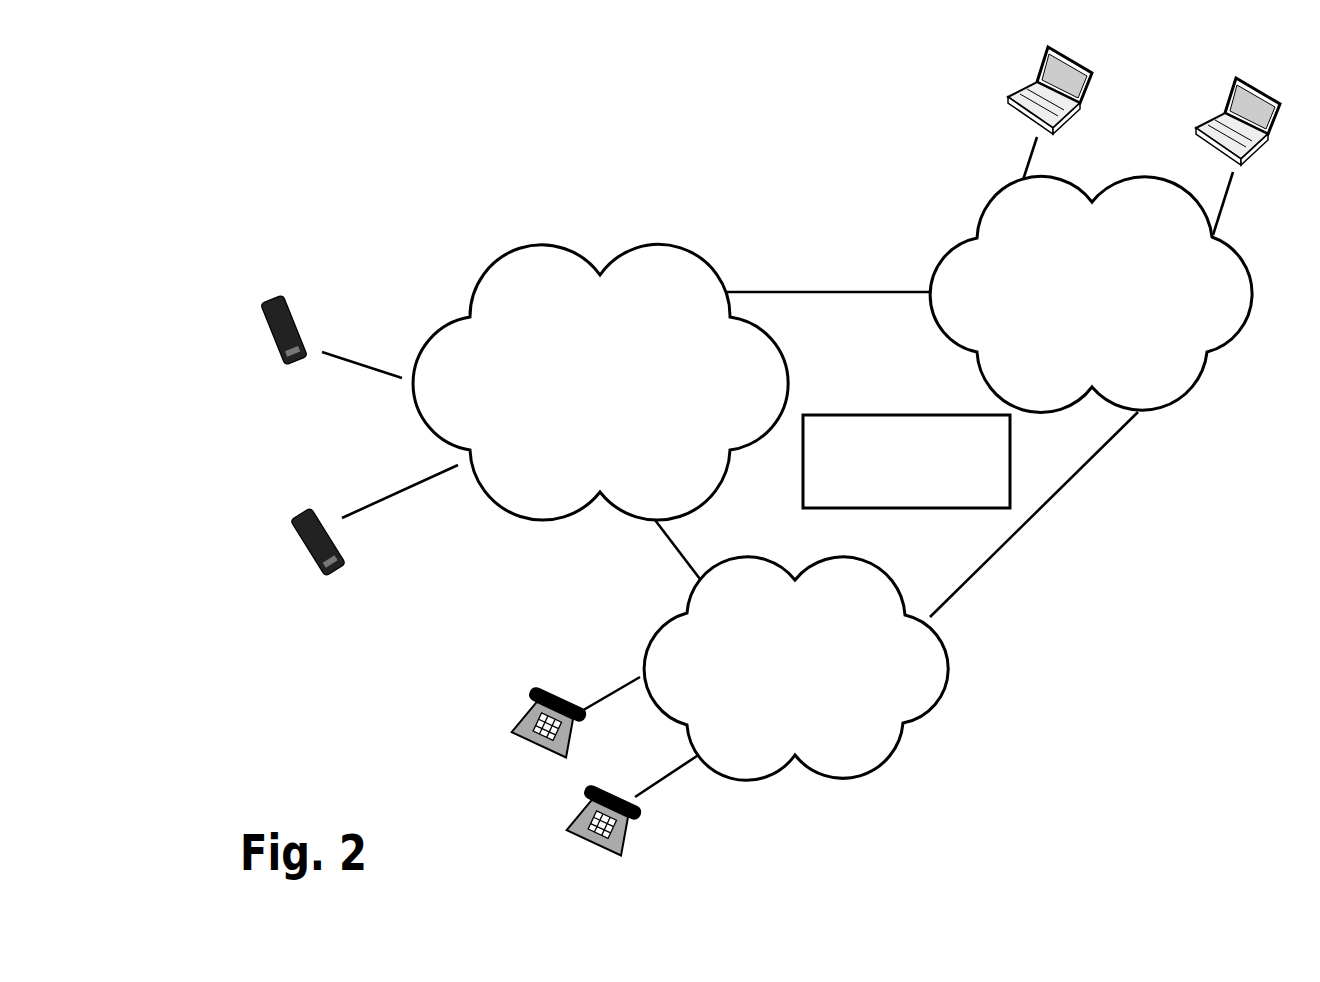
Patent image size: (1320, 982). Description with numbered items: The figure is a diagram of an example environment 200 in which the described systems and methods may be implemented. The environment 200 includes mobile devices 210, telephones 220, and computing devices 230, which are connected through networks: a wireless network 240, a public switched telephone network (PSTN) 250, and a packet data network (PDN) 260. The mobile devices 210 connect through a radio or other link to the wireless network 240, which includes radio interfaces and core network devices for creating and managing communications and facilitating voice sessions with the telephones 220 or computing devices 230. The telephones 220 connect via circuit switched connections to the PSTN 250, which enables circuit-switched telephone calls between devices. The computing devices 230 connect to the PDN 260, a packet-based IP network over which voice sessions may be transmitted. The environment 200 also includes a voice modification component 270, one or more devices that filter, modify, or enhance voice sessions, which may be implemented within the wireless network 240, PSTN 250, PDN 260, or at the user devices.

The environment 200 is at (165, 102).
The mobile device 210 is at (273, 358).
The telephone 220 is at (520, 747).
The computing device 230 is at (1008, 97).
The wireless network 240 is at (503, 263).
The public switched telephone network (PSTN) 250 is at (847, 778).
The packet data network (PDN) 260 is at (1237, 343).
The voice modification component 270 is at (887, 415).